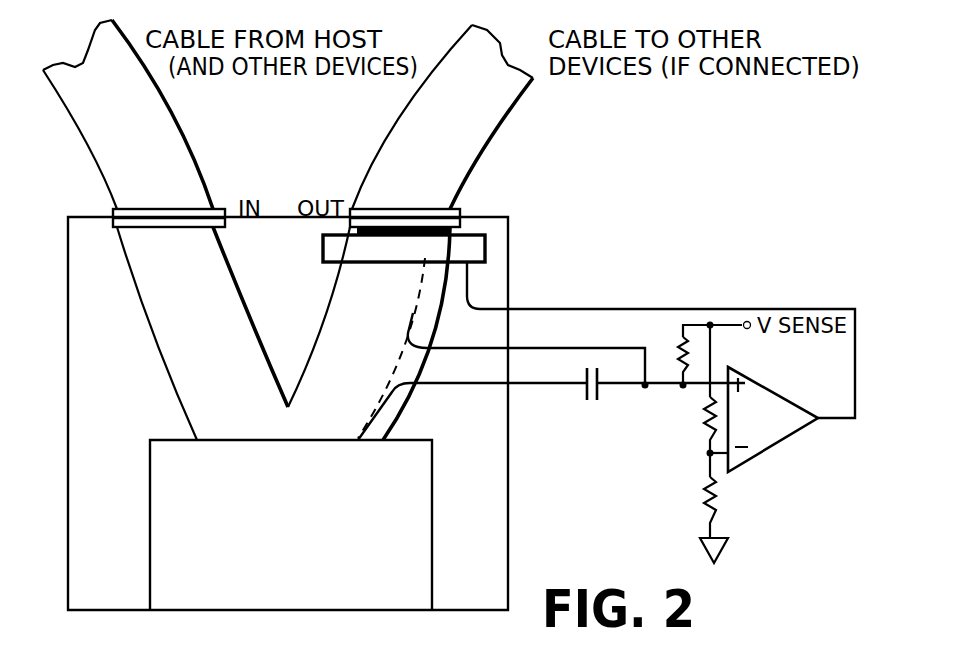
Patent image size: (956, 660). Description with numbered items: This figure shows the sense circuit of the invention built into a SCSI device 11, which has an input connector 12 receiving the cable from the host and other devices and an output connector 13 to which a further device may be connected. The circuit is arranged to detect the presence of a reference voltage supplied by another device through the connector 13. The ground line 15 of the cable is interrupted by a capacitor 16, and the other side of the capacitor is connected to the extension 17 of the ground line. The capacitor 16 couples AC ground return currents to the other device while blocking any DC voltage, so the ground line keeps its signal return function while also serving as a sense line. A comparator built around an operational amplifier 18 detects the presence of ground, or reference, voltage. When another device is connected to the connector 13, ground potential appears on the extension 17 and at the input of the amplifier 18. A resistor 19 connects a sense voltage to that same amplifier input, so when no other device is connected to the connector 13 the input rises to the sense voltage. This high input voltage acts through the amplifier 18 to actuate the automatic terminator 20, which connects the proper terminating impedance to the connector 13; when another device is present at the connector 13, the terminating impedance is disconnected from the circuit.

The device 11 is at (163, 522).
The input connector 12 is at (110, 212).
The output connector 13 is at (460, 218).
The ground line 15 is at (377, 402).
The capacitor 16 is at (586, 390).
The extension of the ground line 17 is at (413, 315).
The operational amplifier 18 is at (765, 390).
The resistor 19 is at (682, 352).
The automatic terminator 20 is at (485, 248).